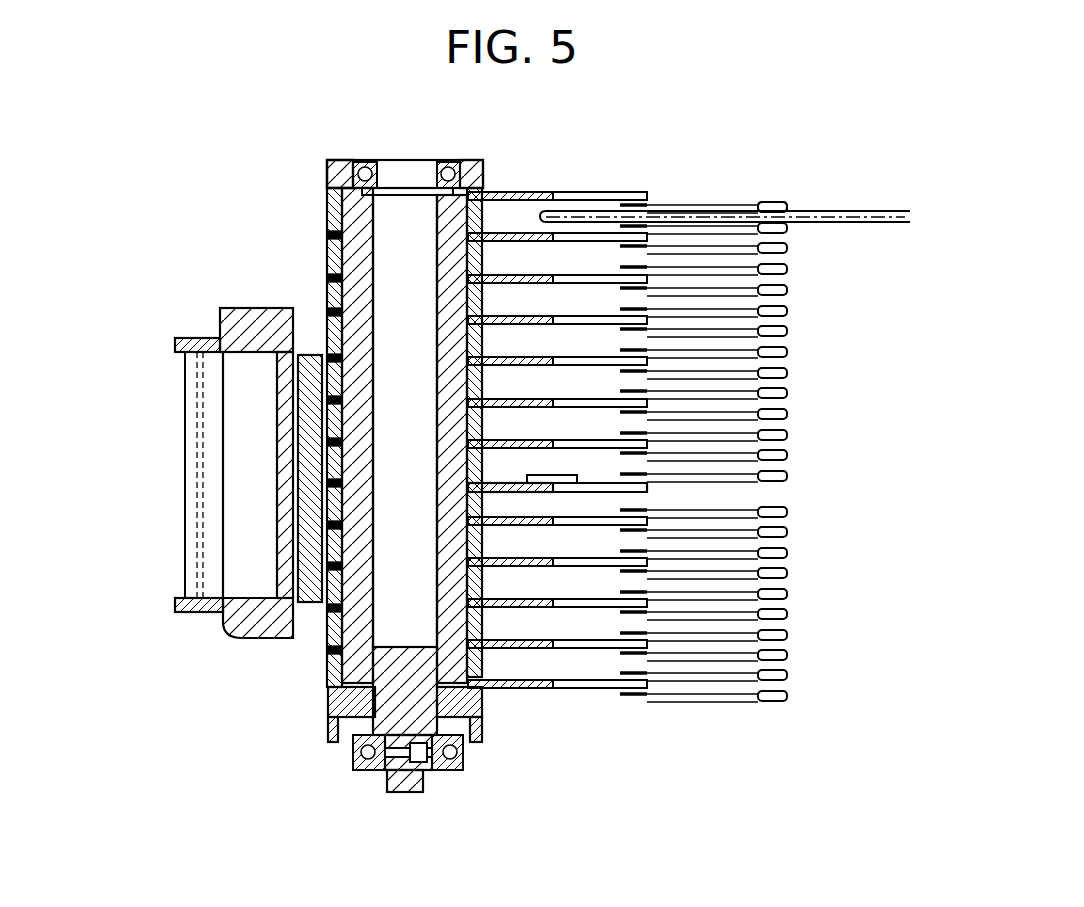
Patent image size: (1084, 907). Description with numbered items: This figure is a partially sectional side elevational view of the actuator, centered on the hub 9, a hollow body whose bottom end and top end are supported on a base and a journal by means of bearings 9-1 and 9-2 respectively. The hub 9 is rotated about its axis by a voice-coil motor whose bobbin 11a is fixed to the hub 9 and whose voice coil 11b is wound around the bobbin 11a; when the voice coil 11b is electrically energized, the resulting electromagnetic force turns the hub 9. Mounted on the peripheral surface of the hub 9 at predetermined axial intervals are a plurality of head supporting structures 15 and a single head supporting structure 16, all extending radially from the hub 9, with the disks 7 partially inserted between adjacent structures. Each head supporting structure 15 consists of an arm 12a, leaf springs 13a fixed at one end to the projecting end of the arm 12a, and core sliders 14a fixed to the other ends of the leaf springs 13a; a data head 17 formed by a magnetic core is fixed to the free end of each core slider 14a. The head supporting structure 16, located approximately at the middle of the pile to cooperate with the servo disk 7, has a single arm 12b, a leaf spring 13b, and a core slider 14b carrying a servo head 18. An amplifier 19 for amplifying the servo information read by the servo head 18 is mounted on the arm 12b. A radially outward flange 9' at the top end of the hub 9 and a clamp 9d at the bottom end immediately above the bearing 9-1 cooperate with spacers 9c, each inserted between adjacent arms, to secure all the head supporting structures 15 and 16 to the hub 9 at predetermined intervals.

The disk 7 is at (853, 216).
The hub 9 is at (382, 465).
The flange 9' is at (335, 144).
The spacer 9c is at (330, 242).
The clamp 9d is at (338, 705).
The bearing 9-1 is at (352, 760).
The bearing 9-2 is at (437, 167).
The bobbin 11a is at (312, 362).
The voice coil 11b is at (193, 334).
The arm 12a is at (527, 190).
The arm 12b is at (788, 516).
The leaf spring 13a is at (738, 200).
The leaf spring 13b is at (783, 463).
The core slider 14a is at (766, 201).
The core slider 14b is at (790, 474).
The head supporting structure 15 is at (596, 268).
The head supporting structure 16 is at (622, 468).
The data head 17 is at (783, 208).
The servo head 18 is at (650, 487).
The amplifier 19 is at (558, 485).